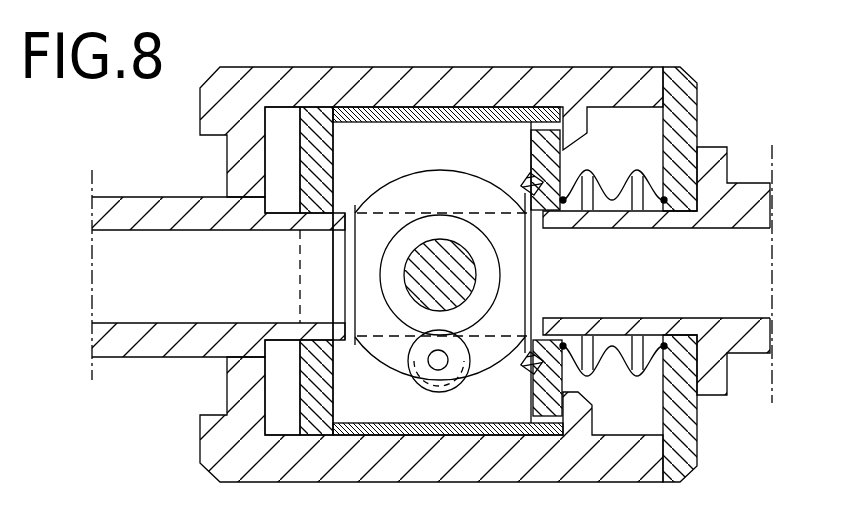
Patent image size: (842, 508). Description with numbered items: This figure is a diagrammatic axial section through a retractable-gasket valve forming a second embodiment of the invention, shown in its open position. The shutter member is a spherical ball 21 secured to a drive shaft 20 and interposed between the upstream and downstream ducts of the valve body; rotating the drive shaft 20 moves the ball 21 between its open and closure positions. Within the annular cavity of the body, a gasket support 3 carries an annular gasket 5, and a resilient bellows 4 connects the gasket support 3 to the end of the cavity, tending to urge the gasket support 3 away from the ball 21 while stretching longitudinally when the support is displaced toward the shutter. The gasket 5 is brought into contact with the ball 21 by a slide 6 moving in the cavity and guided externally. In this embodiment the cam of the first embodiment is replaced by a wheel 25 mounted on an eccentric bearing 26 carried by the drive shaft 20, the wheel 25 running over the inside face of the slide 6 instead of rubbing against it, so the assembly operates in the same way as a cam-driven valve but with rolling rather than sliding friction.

The gasket support 3 is at (572, 158).
The resilient bellows 4 is at (625, 168).
The annular gasket 5 is at (522, 181).
The slide 6 is at (292, 366).
The drive shaft 20 is at (415, 252).
The spherical ball 21 is at (422, 188).
The wheel 25 is at (448, 388).
The eccentric bearing 26 is at (413, 317).